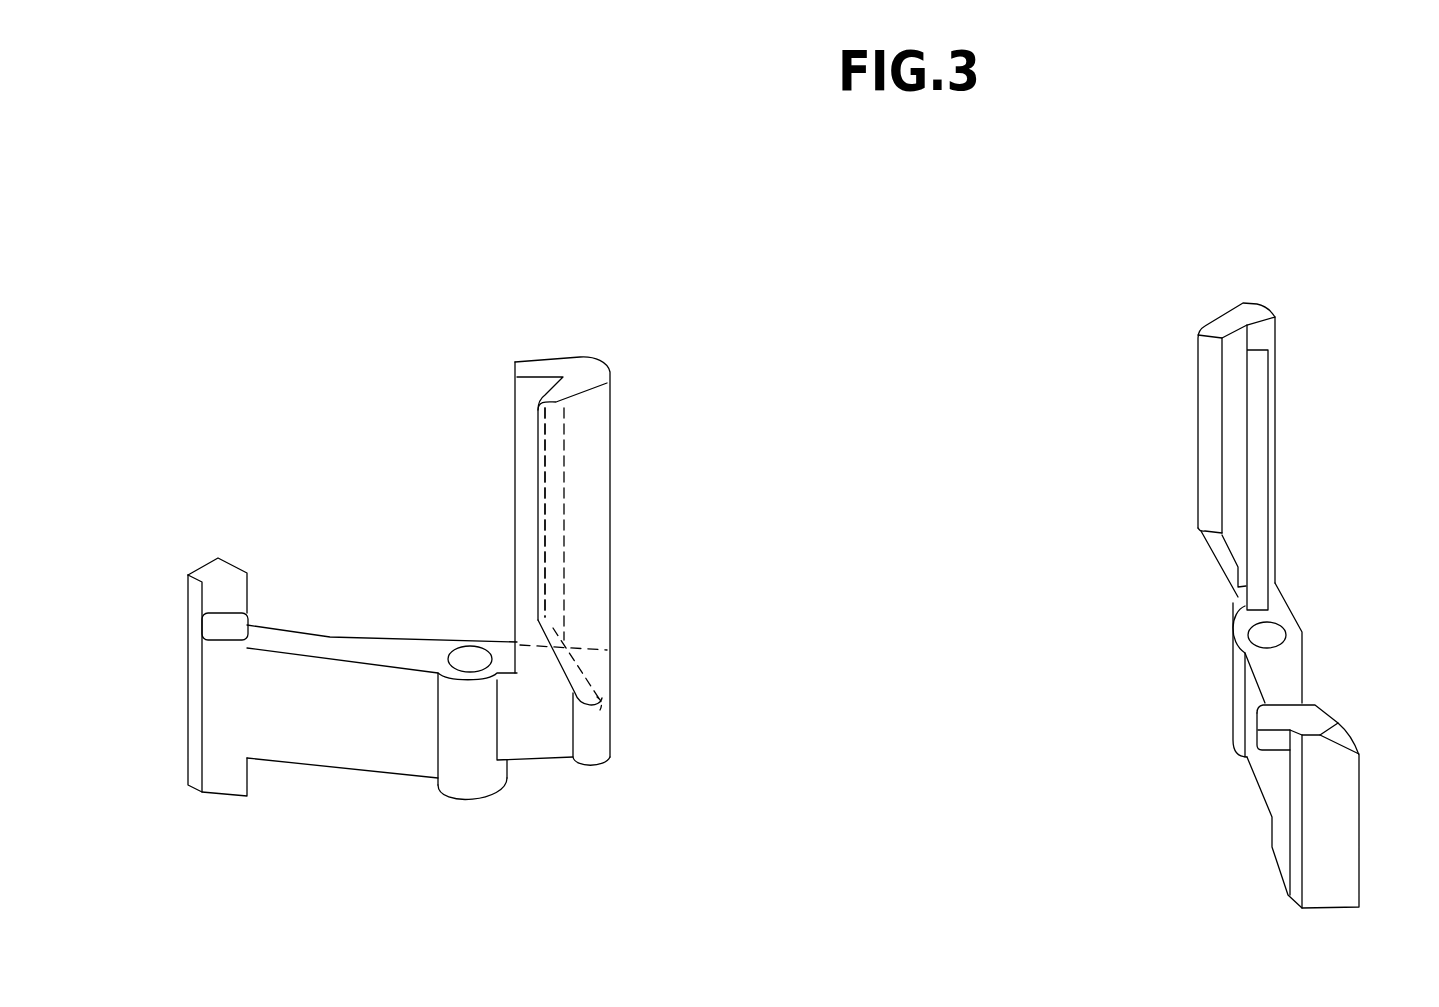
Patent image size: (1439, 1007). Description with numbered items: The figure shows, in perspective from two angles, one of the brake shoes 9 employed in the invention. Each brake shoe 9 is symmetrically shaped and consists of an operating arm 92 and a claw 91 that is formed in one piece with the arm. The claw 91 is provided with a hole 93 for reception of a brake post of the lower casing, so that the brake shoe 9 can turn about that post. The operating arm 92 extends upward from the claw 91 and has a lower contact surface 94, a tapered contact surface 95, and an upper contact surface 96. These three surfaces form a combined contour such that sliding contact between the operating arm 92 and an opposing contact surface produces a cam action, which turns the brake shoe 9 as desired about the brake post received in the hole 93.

The brake shoe 9 is at (600, 330).
The claw 91 is at (215, 713).
The operating arm 92 is at (527, 448).
The hole 93 is at (473, 657).
The lower contact surface 94 is at (587, 730).
The tapered contact surface 95 is at (567, 658).
The upper contact surface 96 is at (550, 517).